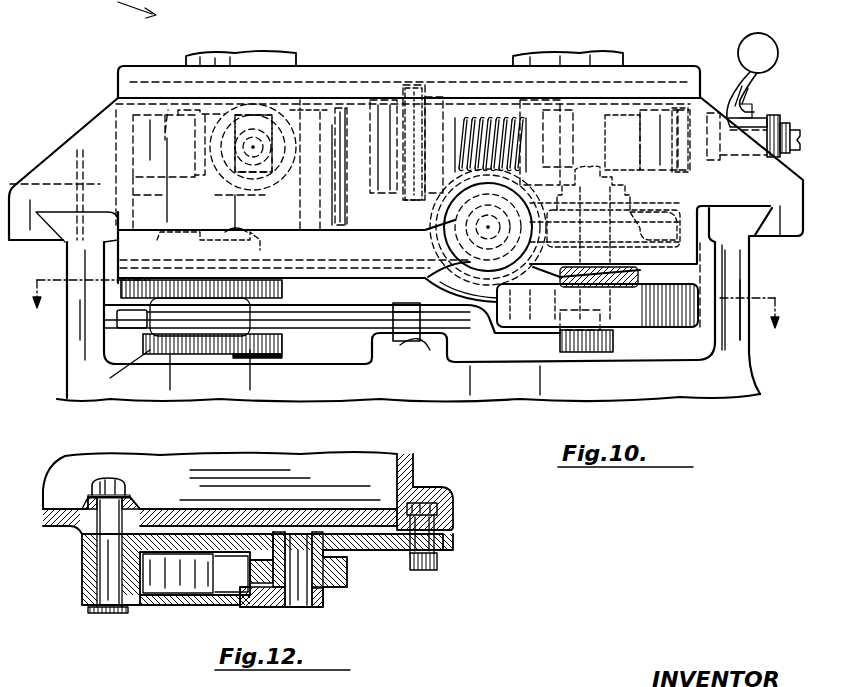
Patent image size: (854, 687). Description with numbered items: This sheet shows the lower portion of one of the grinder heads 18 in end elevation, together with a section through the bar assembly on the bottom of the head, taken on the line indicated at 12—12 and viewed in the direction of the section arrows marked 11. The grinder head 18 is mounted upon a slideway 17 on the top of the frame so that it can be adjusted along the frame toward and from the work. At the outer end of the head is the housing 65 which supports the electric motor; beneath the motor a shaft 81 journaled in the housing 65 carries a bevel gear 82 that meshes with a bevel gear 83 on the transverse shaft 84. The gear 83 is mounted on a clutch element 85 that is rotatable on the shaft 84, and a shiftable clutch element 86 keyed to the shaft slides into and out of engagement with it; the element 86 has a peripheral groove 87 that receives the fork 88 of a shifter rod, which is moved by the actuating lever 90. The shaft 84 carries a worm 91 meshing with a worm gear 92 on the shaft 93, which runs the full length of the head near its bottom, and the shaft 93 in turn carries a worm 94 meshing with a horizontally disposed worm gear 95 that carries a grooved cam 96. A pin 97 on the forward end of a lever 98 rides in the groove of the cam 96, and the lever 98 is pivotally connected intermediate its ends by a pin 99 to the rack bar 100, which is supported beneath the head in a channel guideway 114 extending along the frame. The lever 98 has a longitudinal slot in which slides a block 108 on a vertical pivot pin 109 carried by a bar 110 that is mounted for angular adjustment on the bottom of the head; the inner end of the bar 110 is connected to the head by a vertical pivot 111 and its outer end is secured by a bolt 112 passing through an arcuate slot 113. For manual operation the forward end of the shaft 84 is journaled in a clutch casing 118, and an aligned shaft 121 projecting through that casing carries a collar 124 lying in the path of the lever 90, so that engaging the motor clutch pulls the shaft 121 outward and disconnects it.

In FIG. 10, the section line 11 is at (406, 319).
In FIG. 10, the section line 12 is at (154, 12).
In FIG. 10, the slideway 17 is at (60, 250).
In FIG. 10, the grinder head 18 is at (64, 142).
In FIG. 12, the housing 65 is at (410, 465).
In FIG. 10, the shaft 81 is at (246, 66).
In FIG. 10, the bevel gear 82 is at (255, 145).
In FIG. 10, the bevel gear 83 is at (320, 100).
In FIG. 10, the transverse shaft 84 is at (532, 100).
In FIG. 10, the clutch element 85 is at (318, 187).
In FIG. 10, the shiftable clutch element 86 is at (377, 190).
In FIG. 10, the peripheral groove 87 is at (414, 145).
In FIG. 10, the fork 88 is at (416, 88).
In FIG. 10, the actuating lever 90 is at (764, 46).
In FIG. 10, the worm 91 is at (482, 118).
In FIG. 10, the worm gear 92 is at (562, 172).
In FIG. 10, the shaft 93 is at (428, 280).
In FIG. 10, the worm 94 is at (442, 222).
In FIG. 10, the worm gear 95 is at (657, 222).
In FIG. 10, the grooved cam 96 is at (693, 337).
In FIG. 10, the pin 97 is at (641, 330).
In FIG. 10, the lever 98 is at (310, 325).
In FIG. 12, the lever 98 is at (250, 597).
In FIG. 10, the pin 99 is at (380, 310).
In FIG. 10, the rack bar 100 is at (428, 350).
In FIG. 12, the block 108 is at (337, 585).
In FIG. 12, the vertical pivot pin 109 is at (300, 608).
In FIG. 10, the bar 110 is at (284, 292).
In FIG. 12, the bar 110 is at (373, 553).
In FIG. 10, the vertical pivot 111 is at (237, 228).
In FIG. 12, the vertical pivot 111 is at (106, 613).
In FIG. 10, the bolt 112 is at (150, 307).
In FIG. 12, the bolt 112 is at (453, 533).
In FIG. 12, the arcuate slot 113 is at (453, 490).
In FIG. 10, the channel guideway 114 is at (387, 340).
In FIG. 10, the clutch casing 118 is at (672, 125).
In FIG. 10, the shaft 121 is at (788, 237).
In FIG. 10, the collar 124 is at (780, 115).